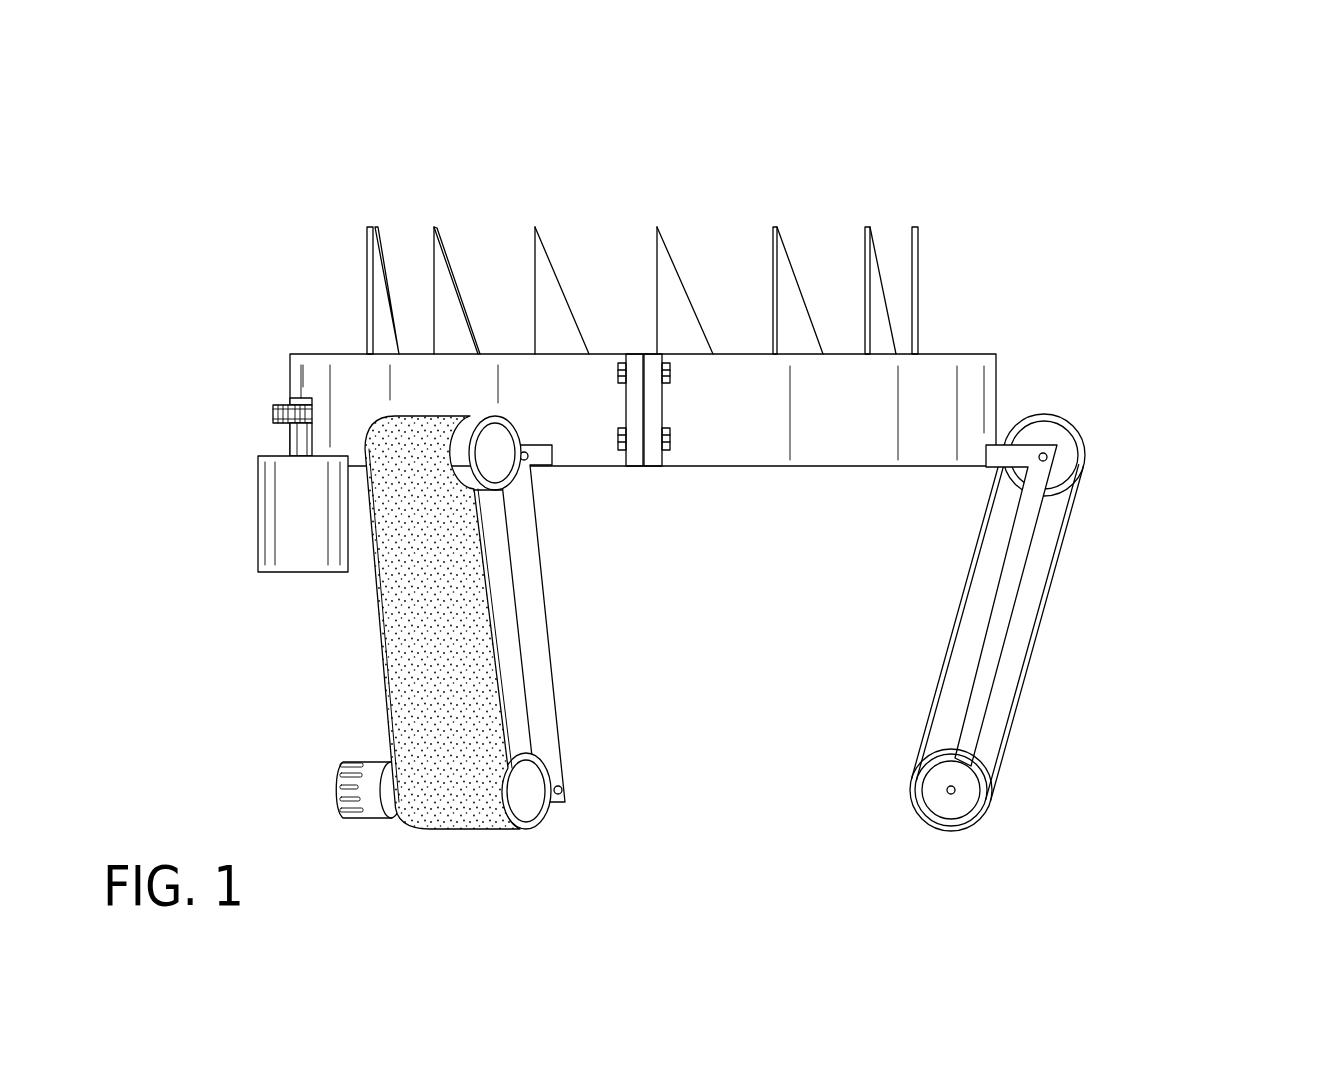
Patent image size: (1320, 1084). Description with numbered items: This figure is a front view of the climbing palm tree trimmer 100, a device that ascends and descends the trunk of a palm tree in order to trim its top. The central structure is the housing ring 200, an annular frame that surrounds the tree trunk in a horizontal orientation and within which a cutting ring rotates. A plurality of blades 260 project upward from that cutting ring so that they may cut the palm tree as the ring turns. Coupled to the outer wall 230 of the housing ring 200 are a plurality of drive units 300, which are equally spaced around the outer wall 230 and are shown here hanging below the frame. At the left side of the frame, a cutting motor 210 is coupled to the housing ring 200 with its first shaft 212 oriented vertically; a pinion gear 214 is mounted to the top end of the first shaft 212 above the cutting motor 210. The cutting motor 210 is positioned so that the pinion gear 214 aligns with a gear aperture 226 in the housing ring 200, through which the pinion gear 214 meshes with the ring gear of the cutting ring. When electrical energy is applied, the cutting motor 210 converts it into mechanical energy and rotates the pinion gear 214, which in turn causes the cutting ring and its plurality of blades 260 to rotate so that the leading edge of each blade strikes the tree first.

The climbing palm tree trimmer 100 is at (1049, 194).
The housing ring 200 is at (1172, 376).
The cutting motor 210 is at (259, 545).
The first shaft 212 is at (293, 428).
The pinion gear 214 is at (273, 412).
The gear aperture 226 is at (312, 398).
The outer wall 230 is at (996, 400).
The plurality of blades 260 is at (865, 227).
The plurality of drive units 300 is at (1037, 865).